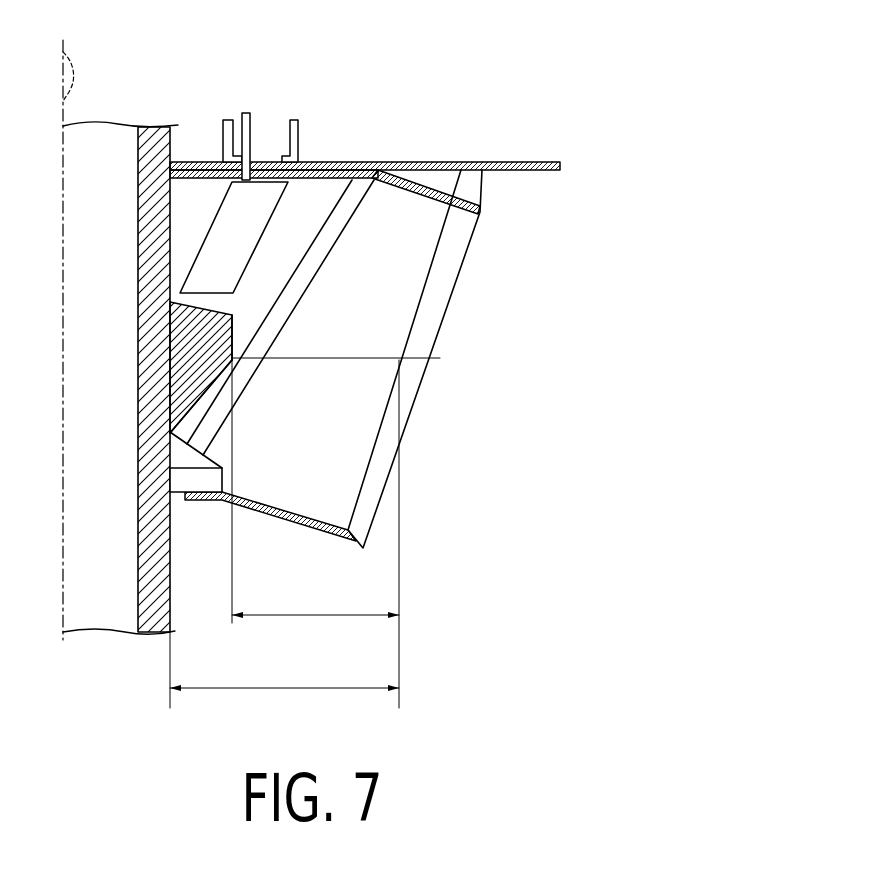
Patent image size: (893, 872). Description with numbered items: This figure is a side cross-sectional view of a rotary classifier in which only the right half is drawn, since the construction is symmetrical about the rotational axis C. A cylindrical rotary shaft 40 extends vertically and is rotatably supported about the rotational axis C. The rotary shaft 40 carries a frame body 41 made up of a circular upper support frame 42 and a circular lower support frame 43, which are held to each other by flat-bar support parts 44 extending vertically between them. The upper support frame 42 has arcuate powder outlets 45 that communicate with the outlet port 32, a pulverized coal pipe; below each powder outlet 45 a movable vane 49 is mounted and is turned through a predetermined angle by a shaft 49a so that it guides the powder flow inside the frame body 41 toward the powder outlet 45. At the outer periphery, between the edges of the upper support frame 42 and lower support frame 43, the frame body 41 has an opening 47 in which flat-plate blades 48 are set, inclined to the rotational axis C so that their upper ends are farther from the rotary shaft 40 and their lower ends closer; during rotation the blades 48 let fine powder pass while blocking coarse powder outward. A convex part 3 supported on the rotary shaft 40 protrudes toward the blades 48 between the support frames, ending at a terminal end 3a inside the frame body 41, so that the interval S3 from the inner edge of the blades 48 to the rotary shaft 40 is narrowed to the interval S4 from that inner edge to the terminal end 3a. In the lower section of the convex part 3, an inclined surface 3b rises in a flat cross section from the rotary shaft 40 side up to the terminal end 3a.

The rotational axis C is at (64, 326).
The convex part 3 is at (238, 306).
The terminal end 3a is at (235, 334).
The inclined surface 3b is at (218, 388).
The outlet port 32 is at (302, 128).
The rotary shaft 40 is at (151, 633).
The frame body 41 is at (426, 168).
The upper support frame 42 is at (362, 168).
The lower support frame 43 is at (277, 516).
The support part 44 is at (328, 238).
The powder outlet 45 is at (277, 162).
The opening 47 is at (432, 388).
The blade 48 is at (468, 232).
The movable vane 49 is at (210, 244).
The shaft 49a is at (241, 114).
The interval S3 is at (284, 534).
The interval S4 is at (315, 491).